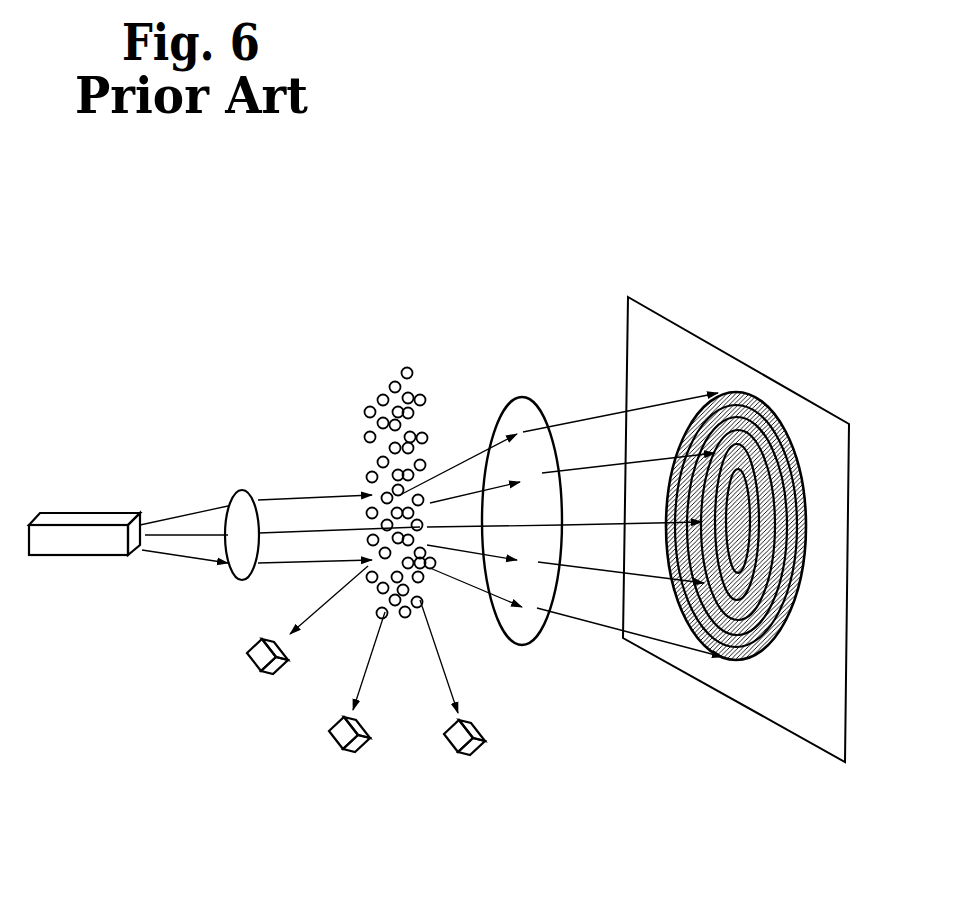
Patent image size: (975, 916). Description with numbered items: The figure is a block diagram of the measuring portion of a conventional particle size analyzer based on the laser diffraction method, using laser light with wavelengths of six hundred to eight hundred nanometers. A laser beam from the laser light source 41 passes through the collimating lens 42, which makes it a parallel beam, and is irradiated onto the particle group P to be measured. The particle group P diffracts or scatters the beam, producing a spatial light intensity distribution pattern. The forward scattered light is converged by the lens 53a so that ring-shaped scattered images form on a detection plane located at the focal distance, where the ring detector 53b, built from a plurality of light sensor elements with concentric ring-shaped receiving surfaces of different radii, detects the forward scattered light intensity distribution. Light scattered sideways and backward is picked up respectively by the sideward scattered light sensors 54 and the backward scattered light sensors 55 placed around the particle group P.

The laser light source 41 is at (93, 520).
The collimating lens 42 is at (250, 490).
The particle group P is at (412, 352).
The lens 53a is at (528, 400).
The ring detector 53b is at (772, 408).
The sideward scattered light sensor 54 is at (473, 750).
The backward scattered light sensor 55 is at (253, 672).